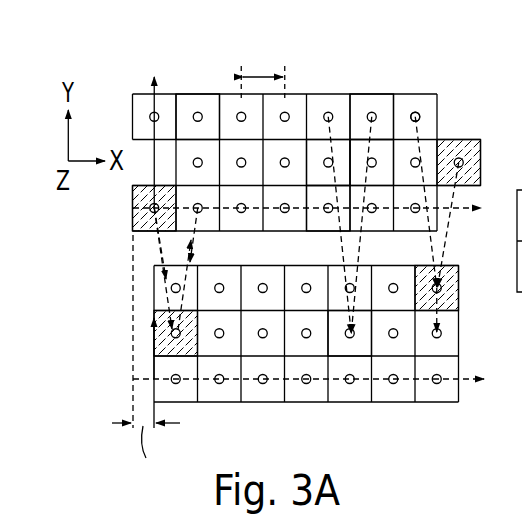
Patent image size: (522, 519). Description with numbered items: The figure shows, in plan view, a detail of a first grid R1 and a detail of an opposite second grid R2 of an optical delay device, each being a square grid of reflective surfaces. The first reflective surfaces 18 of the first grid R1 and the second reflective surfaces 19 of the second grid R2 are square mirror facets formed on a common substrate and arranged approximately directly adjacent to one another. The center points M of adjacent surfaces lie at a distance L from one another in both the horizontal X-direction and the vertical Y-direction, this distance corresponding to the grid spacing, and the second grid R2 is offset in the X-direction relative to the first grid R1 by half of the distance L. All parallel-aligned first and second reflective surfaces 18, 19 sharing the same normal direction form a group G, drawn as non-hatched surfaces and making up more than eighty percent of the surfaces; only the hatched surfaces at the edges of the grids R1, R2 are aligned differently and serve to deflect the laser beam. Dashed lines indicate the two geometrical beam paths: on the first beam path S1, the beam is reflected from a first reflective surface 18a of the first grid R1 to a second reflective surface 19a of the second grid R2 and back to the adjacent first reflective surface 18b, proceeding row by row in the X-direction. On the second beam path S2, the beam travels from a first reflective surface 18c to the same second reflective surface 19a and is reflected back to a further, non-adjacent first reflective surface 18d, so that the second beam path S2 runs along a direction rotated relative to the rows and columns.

The first reflective surfaces 18 is at (287, 170).
The first reflective surface 18a is at (315, 160).
The first reflective surface 18b is at (387, 160).
The first reflective surface 18c is at (392, 107).
The first reflective surface 18d is at (320, 219).
The second reflective surfaces 19 is at (288, 301).
The second reflective surface 19a is at (353, 347).
The first grid R1 is at (116, 102).
The second grid R2 is at (118, 314).
The group G is at (193, 87).
The center points M is at (421, 115).
The first beam path S1 is at (168, 287).
The second beam path S2 is at (368, 132).
The distance L is at (263, 73).